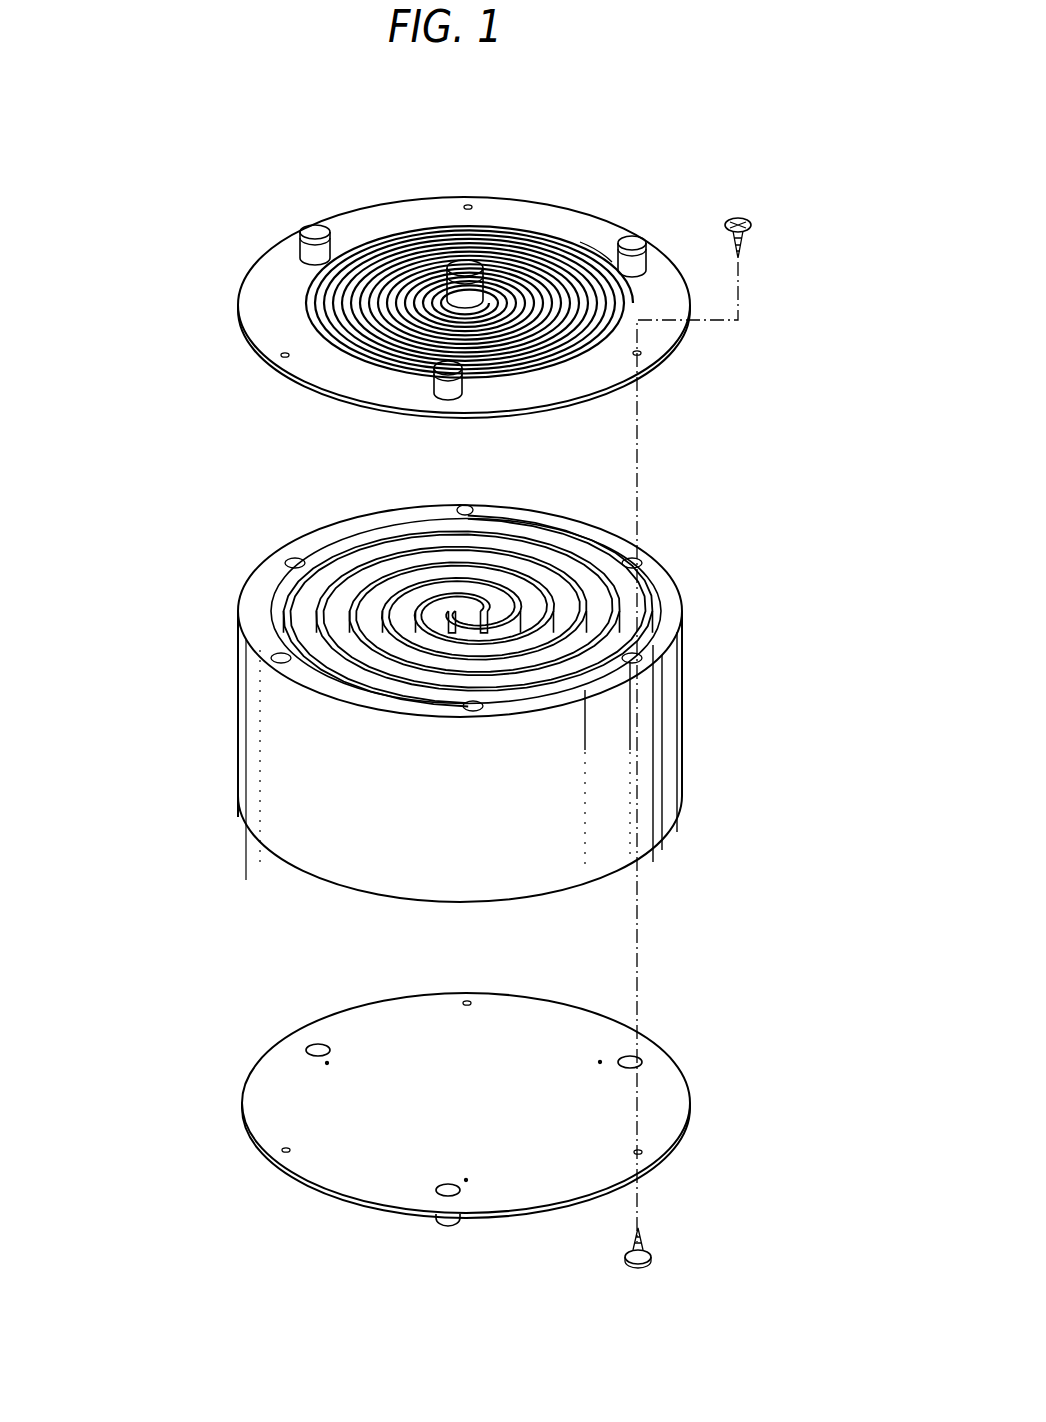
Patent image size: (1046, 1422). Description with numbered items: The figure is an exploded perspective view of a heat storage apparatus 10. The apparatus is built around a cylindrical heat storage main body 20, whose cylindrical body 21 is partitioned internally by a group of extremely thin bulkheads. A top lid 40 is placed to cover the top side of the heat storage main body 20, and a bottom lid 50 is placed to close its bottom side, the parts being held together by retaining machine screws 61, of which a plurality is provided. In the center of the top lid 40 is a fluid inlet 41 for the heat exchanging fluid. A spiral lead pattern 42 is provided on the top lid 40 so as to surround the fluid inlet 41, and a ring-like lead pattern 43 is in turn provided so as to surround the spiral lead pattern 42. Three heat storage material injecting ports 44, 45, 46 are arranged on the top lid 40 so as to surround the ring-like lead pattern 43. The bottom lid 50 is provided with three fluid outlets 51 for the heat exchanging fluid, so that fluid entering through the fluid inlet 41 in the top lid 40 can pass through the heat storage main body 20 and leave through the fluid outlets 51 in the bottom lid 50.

The heat storage apparatus 10 is at (120, 265).
The heat storage main body 20 is at (440, 703).
The cylindrical body 21 is at (653, 725).
The top lid 40 is at (255, 318).
The fluid inlet 41 is at (490, 258).
The spiral lead pattern 42 is at (400, 265).
The ring-like lead pattern 43 is at (593, 245).
The heat storage material injecting port 44 is at (634, 243).
The heat storage material injecting port 45 is at (448, 372).
The heat storage material injecting port 46 is at (313, 230).
The bottom lid 50 is at (265, 1105).
The fluid outlet 51 is at (315, 1045).
The retaining machine screw 61 is at (752, 226).